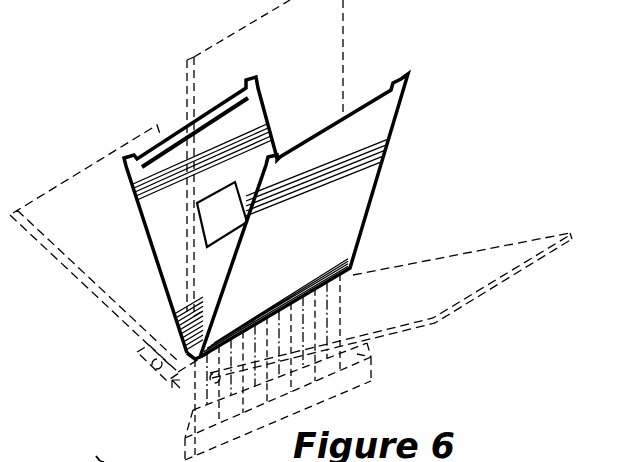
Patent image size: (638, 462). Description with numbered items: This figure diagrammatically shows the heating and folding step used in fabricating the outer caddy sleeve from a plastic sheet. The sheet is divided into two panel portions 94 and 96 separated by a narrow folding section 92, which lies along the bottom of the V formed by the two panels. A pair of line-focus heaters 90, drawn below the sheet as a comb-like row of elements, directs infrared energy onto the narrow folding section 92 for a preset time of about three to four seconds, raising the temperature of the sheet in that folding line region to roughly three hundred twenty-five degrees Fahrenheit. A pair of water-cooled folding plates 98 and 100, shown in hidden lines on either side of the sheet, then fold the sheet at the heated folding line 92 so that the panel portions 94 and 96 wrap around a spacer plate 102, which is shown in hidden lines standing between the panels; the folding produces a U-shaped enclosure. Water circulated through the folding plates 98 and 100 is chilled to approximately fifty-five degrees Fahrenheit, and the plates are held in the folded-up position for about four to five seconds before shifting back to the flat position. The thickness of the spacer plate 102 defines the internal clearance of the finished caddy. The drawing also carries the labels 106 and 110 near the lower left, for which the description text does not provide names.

The line-focus heaters 90 is at (352, 384).
The folding section 92 is at (192, 360).
The panel portion 94 is at (127, 150).
The panel portion 96 is at (398, 97).
The folding plate 98 is at (58, 188).
The folding plate 100 is at (467, 305).
The spacer plate 102 is at (338, 20).
The bracket 106 is at (98, 459).
The base 110 is at (122, 451).